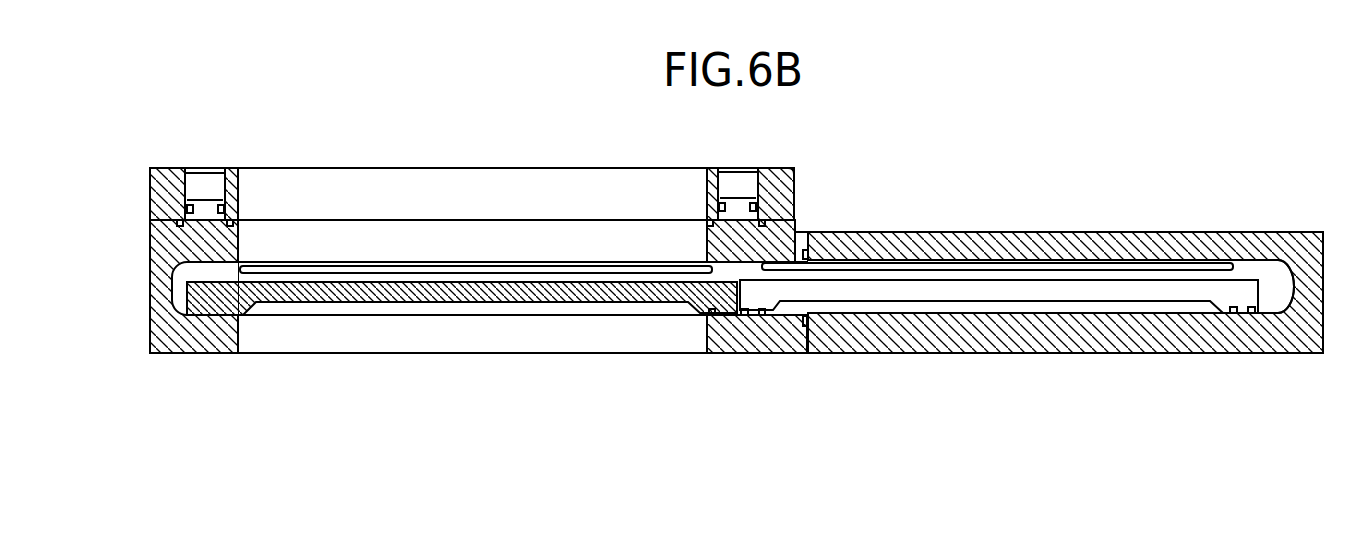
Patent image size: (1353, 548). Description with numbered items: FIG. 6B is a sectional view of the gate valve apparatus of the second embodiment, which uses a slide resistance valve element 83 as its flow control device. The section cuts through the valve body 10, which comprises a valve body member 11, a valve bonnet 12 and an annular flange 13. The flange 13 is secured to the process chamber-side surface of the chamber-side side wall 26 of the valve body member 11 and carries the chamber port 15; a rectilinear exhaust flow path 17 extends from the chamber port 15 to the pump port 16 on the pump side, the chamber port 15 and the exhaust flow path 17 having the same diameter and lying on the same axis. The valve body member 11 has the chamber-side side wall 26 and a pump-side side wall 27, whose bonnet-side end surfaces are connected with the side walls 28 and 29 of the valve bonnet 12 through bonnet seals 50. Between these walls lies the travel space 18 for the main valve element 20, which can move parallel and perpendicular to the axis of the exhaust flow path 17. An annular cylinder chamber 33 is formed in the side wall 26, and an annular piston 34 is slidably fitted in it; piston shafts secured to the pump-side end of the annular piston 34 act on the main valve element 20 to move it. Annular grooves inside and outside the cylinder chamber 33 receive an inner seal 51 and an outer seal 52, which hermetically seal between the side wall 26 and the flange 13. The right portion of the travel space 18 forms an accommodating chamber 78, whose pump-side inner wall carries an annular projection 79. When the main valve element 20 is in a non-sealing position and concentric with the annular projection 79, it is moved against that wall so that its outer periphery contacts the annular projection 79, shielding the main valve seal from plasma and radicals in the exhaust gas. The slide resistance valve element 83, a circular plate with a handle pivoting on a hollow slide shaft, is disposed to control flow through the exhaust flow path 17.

The valve body 10 is at (146, 150).
The valve body member 11 is at (772, 356).
The valve bonnet 12 is at (1002, 352).
The flange 13 is at (778, 166).
The chamber port 15 is at (262, 190).
The pump port 16 is at (270, 338).
The exhaust flow path 17 is at (465, 316).
The travel space 18 is at (176, 284).
The main valve element 20 is at (543, 296).
The chamber-side side wall 26 is at (796, 236).
The pump-side side wall 27 is at (750, 336).
The side wall of the valve bonnet 28 is at (1065, 249).
The side wall of the valve bonnet 29 is at (1068, 336).
The annular cylinder chamber 33 is at (188, 192).
The annular piston 34 is at (740, 205).
The bonnet seal 50 is at (808, 251).
The inner seal 51 is at (707, 223).
The outer seal 52 is at (182, 226).
The accommodating chamber 78 is at (1282, 286).
The annular projection 79 is at (714, 318).
The slide resistance valve element 83 is at (385, 274).